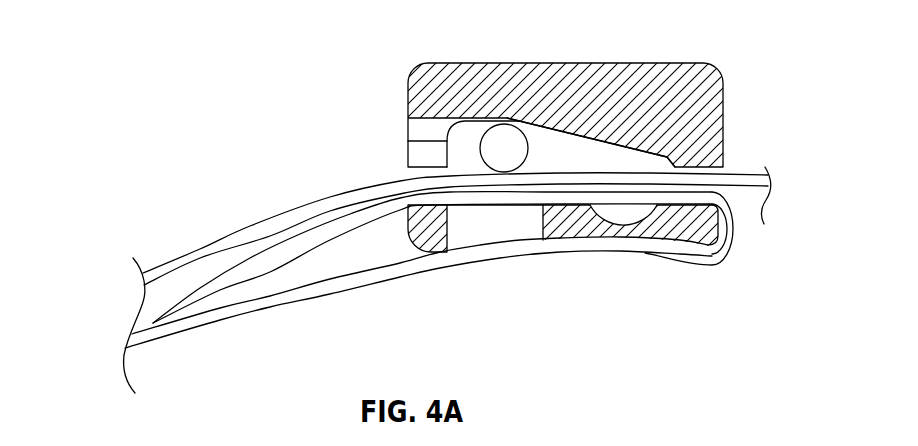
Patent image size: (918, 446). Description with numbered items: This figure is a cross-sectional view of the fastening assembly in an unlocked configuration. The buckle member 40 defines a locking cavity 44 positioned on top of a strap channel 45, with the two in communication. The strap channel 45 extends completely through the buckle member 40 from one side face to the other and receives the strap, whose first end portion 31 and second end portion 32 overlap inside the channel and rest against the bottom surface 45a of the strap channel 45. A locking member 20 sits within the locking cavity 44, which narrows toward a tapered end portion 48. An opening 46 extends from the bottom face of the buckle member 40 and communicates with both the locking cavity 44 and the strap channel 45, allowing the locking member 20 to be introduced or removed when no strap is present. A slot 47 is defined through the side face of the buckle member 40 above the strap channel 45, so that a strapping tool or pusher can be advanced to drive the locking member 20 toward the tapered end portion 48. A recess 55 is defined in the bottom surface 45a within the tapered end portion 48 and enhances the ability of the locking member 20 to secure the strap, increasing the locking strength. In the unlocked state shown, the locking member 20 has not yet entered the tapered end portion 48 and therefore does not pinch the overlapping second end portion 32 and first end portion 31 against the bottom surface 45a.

The locking member 20 is at (505, 140).
The first end portion 31 is at (145, 343).
The second end portion 32 is at (143, 300).
The buckle member 40 is at (725, 90).
The locking cavity 44 is at (465, 133).
The strap channel 45 is at (418, 170).
The bottom surface 45a is at (568, 208).
The opening 46 is at (495, 222).
The slot 47 is at (418, 127).
The tapered end portion 48 is at (647, 158).
The recess 55 is at (630, 212).